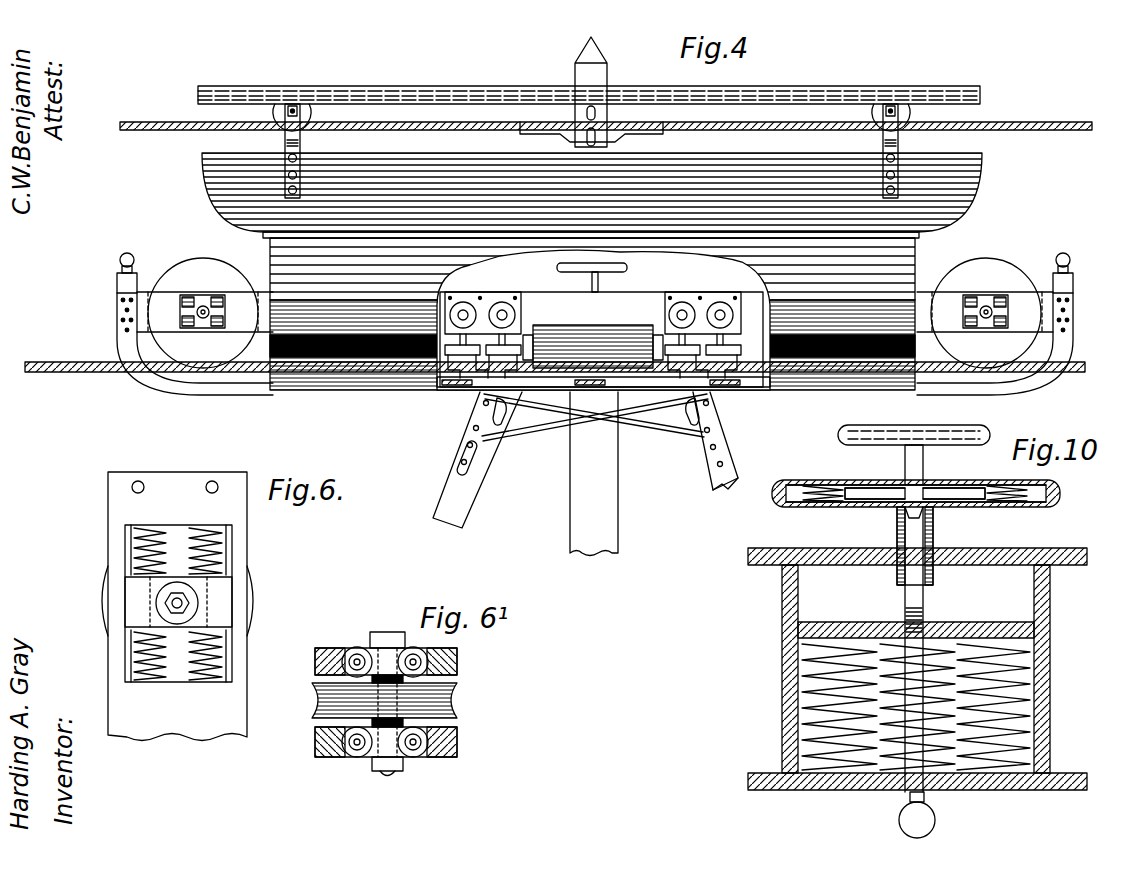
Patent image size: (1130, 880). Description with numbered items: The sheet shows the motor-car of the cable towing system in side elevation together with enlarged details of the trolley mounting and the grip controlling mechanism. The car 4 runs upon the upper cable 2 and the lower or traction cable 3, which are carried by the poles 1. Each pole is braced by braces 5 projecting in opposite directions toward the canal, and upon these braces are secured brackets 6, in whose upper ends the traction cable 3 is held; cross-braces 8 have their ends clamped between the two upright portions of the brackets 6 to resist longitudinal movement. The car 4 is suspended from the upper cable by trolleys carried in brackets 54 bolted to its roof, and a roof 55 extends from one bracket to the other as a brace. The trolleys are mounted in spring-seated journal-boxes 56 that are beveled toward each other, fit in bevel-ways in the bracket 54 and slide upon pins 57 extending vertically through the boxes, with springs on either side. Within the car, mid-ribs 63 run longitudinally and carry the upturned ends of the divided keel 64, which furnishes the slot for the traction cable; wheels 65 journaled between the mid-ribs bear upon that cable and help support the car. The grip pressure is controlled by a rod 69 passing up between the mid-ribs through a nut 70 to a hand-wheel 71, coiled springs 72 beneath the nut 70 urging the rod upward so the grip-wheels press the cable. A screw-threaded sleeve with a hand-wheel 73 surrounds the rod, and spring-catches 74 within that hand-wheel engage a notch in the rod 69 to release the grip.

In FIG. 4, the pole 1 is at (594, 474).
In FIG. 4, the upper cable 2 is at (122, 130).
In FIG. 4, the lower or traction cable 3 is at (555, 355).
In FIG. 4, the car 4 is at (255, 224).
In FIG. 4, the brace 5 is at (585, 460).
In FIG. 4, the bracket 6 is at (490, 410).
In FIG. 4, the cross-brace 8 is at (552, 425).
In FIG. 4, the trolley-bracket 54 is at (283, 135).
In FIG. 6, the trolley-bracket 54 is at (177, 606).
In FIG. 6', the trolley-bracket 54 is at (458, 662).
In FIG. 4, the roof 55 is at (478, 88).
In FIG. 6, the spring-seated journal-box 56 is at (222, 596).
In FIG. 6', the spring-seated journal-box 56 is at (352, 650).
In FIG. 6, the pin 57 is at (228, 540).
In FIG. 6', the pin 57 is at (409, 707).
In FIG. 4, the mid-rib 63 is at (595, 312).
In FIG. 4, the divided keel 64 is at (192, 392).
In FIG. 4, the wheel 65 is at (594, 313).
In FIG. 10, the rod 69 is at (924, 610).
In FIG. 10, the nut 70 is at (917, 669).
In FIG. 10, the hand-wheel 71 is at (914, 422).
In FIG. 10, the coiled spring 72 is at (1020, 708).
In FIG. 10, the hand-wheel 73 is at (916, 517).
In FIG. 10, the spring-catch 74 is at (843, 508).